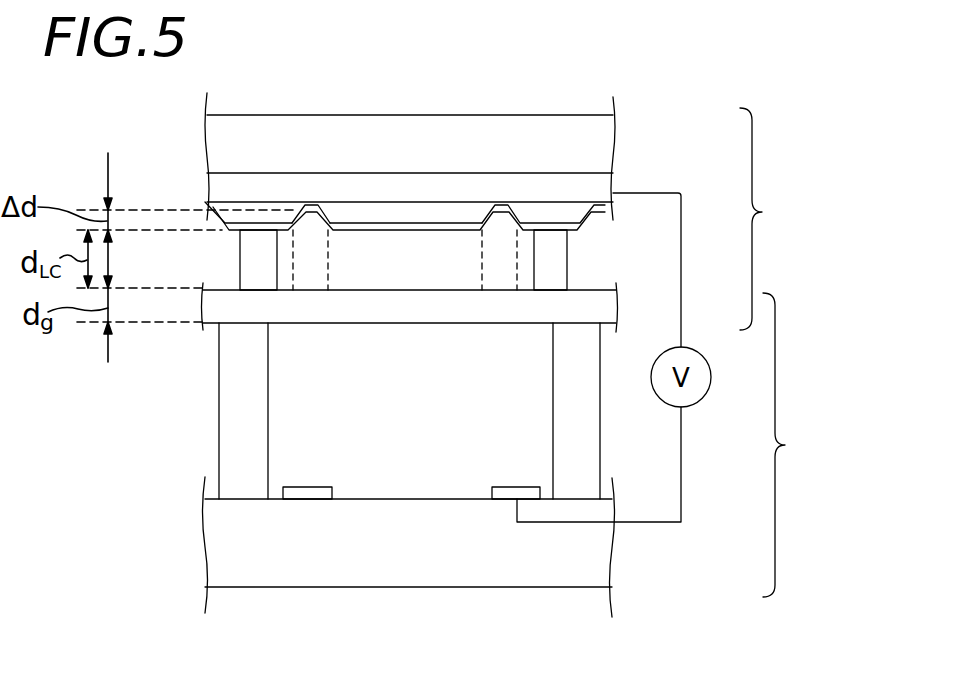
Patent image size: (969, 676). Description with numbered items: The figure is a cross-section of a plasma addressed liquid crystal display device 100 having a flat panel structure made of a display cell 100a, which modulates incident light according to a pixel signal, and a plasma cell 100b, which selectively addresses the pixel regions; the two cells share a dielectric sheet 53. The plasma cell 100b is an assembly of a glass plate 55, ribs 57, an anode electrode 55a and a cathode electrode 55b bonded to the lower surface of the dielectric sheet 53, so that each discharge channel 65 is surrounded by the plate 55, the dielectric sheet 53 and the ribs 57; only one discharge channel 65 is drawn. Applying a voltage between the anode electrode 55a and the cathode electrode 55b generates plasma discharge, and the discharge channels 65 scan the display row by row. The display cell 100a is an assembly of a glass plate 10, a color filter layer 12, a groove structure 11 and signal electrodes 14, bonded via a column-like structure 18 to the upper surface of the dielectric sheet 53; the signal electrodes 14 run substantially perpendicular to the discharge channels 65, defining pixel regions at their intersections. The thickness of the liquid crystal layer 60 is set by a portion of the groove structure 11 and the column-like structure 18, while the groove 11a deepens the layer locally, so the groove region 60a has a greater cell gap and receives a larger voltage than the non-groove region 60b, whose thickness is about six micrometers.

The plasma addressed liquid crystal display device 100 is at (621, 72).
The display cell 100a is at (795, 219).
The plasma cell 100b is at (822, 445).
The glass plate 10 is at (597, 143).
The groove structure 11 is at (415, 213).
The groove 11a is at (317, 192).
The color filter layer 12 is at (597, 185).
The signal electrode 14 is at (590, 228).
The column-like structure 18 is at (558, 265).
The liquid crystal layer 60 is at (224, 263).
The groove region 60a is at (318, 253).
The non-groove region 60b is at (458, 273).
The dielectric sheet 53 is at (220, 310).
The rib 57 is at (227, 468).
The glass plate 55 is at (555, 582).
The anode electrode 55a is at (507, 495).
The cathode electrode 55b is at (305, 495).
The discharge channel 65 is at (402, 475).